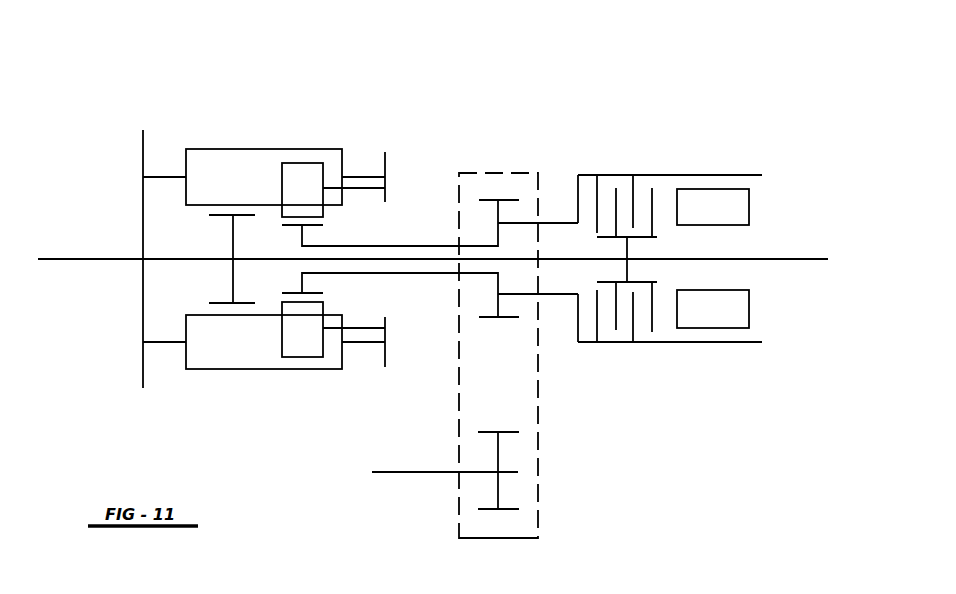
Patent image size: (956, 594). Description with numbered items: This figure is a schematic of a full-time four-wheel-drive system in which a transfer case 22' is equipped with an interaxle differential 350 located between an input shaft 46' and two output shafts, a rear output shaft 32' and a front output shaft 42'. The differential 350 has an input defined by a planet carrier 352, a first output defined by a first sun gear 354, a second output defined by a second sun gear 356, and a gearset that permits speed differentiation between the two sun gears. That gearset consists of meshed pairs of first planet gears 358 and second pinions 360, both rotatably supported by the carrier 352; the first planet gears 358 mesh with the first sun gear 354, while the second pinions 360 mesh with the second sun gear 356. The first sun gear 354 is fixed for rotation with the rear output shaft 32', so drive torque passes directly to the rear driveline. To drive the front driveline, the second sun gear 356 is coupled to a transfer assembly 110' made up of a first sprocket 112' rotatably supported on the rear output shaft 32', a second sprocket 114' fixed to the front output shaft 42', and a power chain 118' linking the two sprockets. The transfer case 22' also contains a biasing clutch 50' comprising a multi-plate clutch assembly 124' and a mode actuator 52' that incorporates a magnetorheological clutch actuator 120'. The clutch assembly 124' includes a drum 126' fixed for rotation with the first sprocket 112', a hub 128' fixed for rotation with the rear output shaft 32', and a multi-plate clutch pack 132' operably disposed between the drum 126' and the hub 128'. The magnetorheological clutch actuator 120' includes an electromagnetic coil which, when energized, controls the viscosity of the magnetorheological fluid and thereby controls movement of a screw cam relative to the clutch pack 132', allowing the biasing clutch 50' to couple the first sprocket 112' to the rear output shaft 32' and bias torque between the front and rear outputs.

The transfer case 22' is at (718, 216).
The rear output shaft 32' is at (568, 243).
The front output shaft 42' is at (445, 453).
The input shaft 46' is at (161, 238).
The biasing clutch 50' is at (670, 169).
The mode actuator 52' is at (768, 193).
The transfer assembly 110' is at (565, 355).
The first sprocket 112' is at (528, 216).
The second sprocket 114' is at (550, 470).
The power chain 118' is at (537, 553).
The magnetorheological clutch actuator 120' is at (760, 309).
The multi-plate clutch assembly 124' is at (667, 342).
The drum 126' is at (702, 337).
The hub 128' is at (652, 259).
The multi-plate clutch pack 132' is at (683, 188).
The interaxle differential 350 is at (342, 158).
The planet carrier 352 is at (143, 157).
The first sun gear 354 is at (233, 243).
The second sun gear 356 is at (303, 232).
The first planet gears 358 is at (224, 176).
The second pinions 360 is at (300, 340).